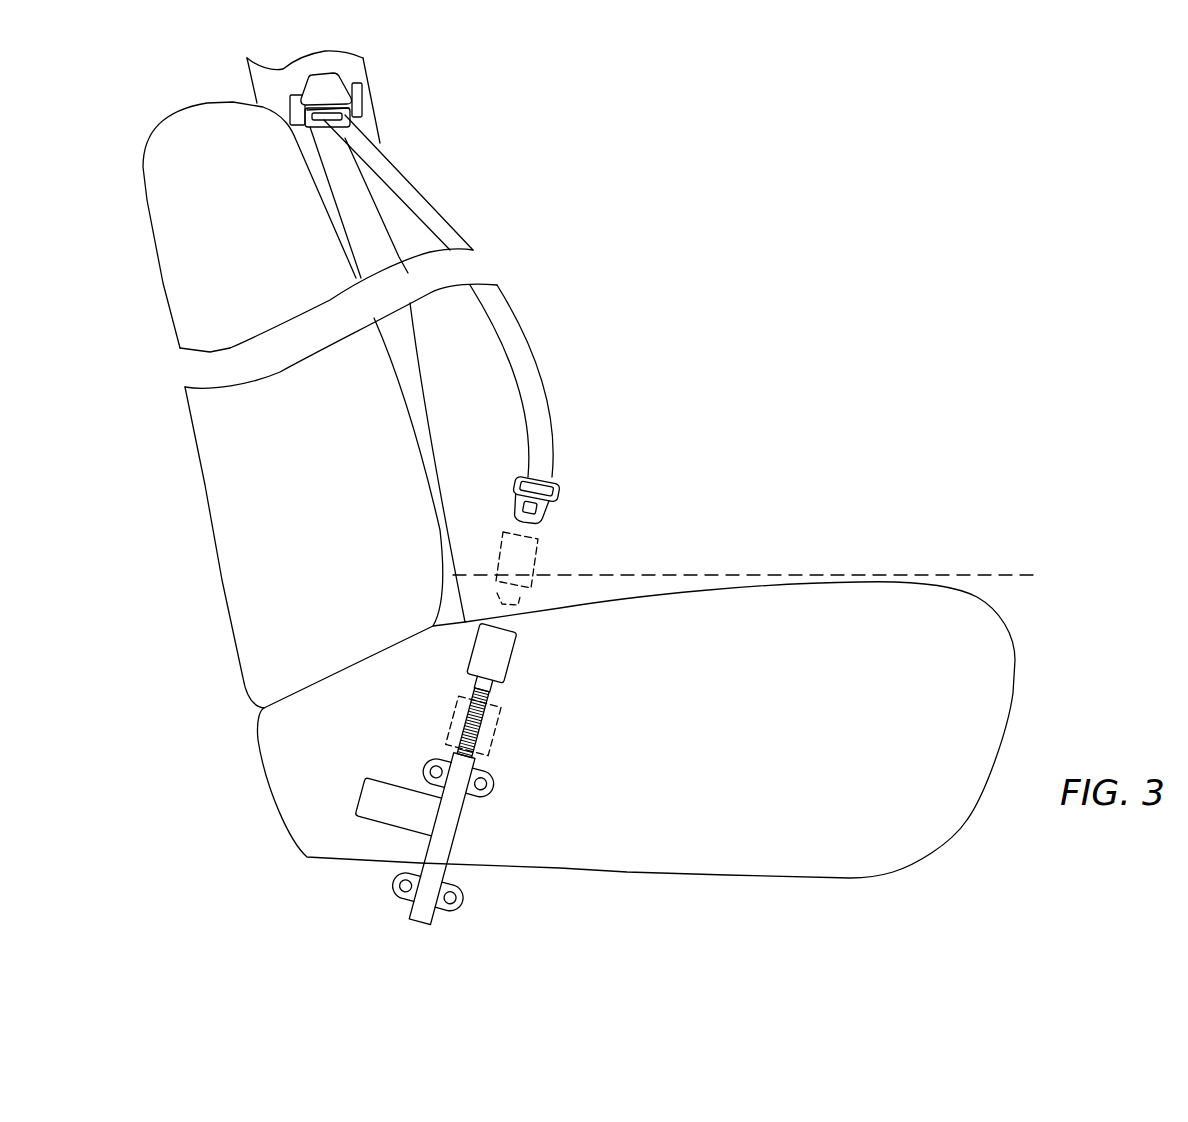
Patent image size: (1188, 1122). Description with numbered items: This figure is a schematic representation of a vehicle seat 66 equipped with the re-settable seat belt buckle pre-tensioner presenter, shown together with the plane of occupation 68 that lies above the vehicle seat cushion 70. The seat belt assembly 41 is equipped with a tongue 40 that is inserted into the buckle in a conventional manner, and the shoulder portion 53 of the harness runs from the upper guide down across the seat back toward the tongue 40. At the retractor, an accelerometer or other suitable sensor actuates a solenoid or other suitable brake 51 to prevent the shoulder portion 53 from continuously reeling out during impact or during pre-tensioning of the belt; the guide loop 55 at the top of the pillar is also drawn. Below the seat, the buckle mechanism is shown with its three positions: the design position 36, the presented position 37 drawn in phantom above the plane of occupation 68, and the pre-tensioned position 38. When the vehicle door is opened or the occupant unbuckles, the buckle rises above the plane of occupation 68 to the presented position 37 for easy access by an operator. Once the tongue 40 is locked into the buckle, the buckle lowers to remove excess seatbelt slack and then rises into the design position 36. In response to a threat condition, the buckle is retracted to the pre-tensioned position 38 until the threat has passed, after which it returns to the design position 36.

The design position 36 is at (517, 643).
The presented position 37 is at (540, 558).
The pre-tensioned position 38 is at (493, 730).
The tongue 40 is at (548, 508).
The seat belt assembly 41 is at (546, 492).
The brake 51 is at (357, 90).
The shoulder portion 53 is at (407, 183).
The guide loop 55 is at (333, 83).
The vehicle seat 66 is at (650, 440).
The plane of occupation 68 is at (965, 548).
The vehicle seat cushion 70 is at (852, 721).